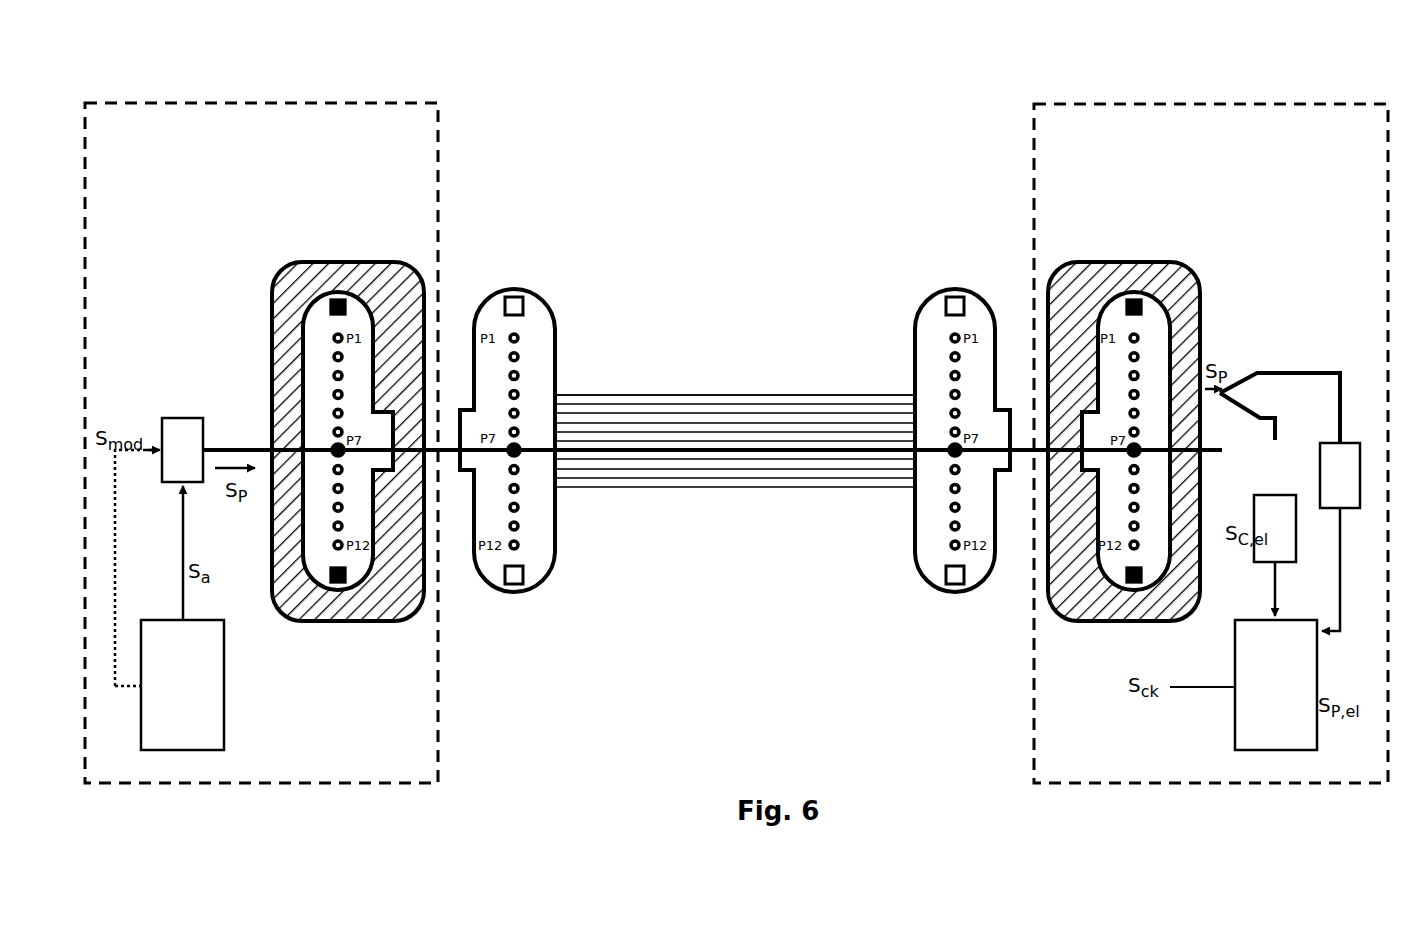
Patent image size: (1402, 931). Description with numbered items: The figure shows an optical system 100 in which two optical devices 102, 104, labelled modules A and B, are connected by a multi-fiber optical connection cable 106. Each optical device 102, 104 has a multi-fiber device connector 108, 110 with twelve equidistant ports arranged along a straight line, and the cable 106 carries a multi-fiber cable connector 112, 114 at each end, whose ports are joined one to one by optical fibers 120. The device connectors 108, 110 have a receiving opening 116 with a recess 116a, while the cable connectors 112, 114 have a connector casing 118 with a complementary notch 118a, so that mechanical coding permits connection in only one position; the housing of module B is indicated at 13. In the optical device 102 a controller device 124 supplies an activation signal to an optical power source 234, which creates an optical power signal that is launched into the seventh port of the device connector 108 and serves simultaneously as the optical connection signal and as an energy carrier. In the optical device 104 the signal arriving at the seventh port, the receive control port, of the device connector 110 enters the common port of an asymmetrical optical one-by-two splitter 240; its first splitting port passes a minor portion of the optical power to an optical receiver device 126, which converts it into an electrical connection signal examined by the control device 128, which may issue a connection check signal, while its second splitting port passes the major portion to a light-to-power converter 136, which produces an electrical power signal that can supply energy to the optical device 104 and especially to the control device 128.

The module housing 13 is at (1277, 104).
The optical system 100 is at (760, 158).
The optical device 102 is at (266, 103).
The optical device 104 is at (1195, 104).
The multi-fiber optical connection cable 106 is at (700, 384).
The multi-fiber device connector 108 is at (336, 262).
The multi-fiber device connector 110 is at (1128, 262).
The multi-fiber cable connector 112 is at (556, 303).
The multi-fiber cable connector 114 is at (916, 303).
The receiving opening 116 is at (300, 358).
The recess 116a is at (380, 437).
The connector casing 118 is at (519, 289).
The notch 118a is at (462, 480).
The optical fiber 120 is at (662, 470).
The controller device 124 is at (208, 690).
The optical receiver device 126 is at (1267, 475).
The control device 128 is at (1240, 718).
The light-to-power converter 136 is at (1345, 455).
The optical power source 234 is at (180, 432).
The optical 1×2 splitter 240 is at (1280, 408).